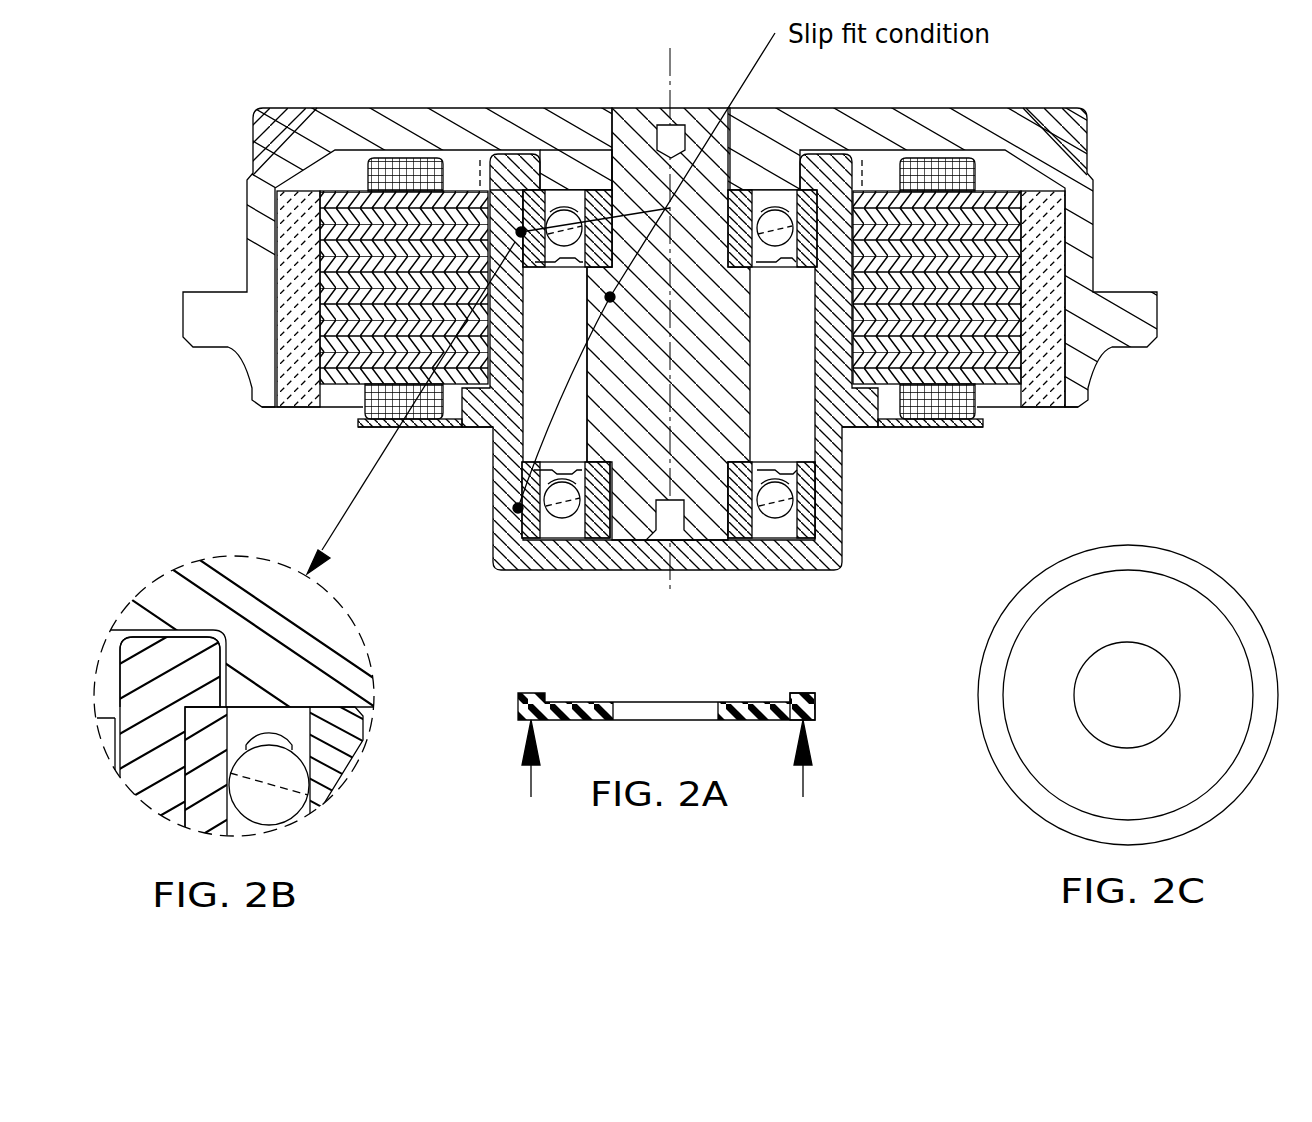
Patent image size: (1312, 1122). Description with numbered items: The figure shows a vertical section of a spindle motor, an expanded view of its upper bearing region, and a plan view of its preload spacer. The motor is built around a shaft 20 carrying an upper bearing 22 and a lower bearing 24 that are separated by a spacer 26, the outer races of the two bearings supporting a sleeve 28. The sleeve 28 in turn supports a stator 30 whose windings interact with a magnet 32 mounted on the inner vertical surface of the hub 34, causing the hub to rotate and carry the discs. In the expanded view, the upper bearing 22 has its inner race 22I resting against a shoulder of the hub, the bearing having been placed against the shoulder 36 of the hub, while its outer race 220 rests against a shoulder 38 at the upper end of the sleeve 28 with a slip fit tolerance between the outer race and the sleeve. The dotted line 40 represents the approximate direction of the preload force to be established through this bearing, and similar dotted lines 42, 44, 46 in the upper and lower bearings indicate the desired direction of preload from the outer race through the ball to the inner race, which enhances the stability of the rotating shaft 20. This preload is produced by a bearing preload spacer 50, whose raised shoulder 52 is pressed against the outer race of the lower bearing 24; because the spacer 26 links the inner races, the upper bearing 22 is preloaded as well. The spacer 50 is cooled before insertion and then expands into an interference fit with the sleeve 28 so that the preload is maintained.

In FIG. 2A, the shaft 20 is at (622, 135).
In FIG. 2A, the upper bearing 22 is at (550, 141).
In FIG. 2A, the inner race 22I is at (597, 192).
In FIG. 2B, the inner race 22I is at (353, 748).
In FIG. 2A, the outer race 220 is at (530, 205).
In FIG. 2B, the outer race 220 is at (207, 797).
In FIG. 2A, the lower bearing 24 is at (568, 545).
In FIG. 2A, the spacer 26 is at (605, 335).
In FIG. 2A, the sleeve 28 is at (465, 430).
In FIG. 2B, the sleeve 28 is at (148, 773).
In FIG. 2A, the stator 30 is at (457, 185).
In FIG. 2A, the magnet 32 is at (290, 400).
In FIG. 2A, the hub 34 is at (262, 252).
In FIG. 2A, the shoulder 36 is at (572, 145).
In FIG. 2A, the shoulder 38 is at (522, 154).
In FIG. 2B, the shoulder 38 is at (168, 650).
In FIG. 2B, the dotted line 40 is at (268, 790).
In FIG. 2A, the dotted line 42 is at (560, 505).
In FIG. 2A, the dotted line 44 is at (775, 505).
In FIG. 2A, the dotted line 46 is at (777, 226).
In FIG. 2A, the bearing preload spacer 50 is at (570, 722).
In FIG. 2C, the bearing preload spacer 50 is at (1148, 548).
In FIG. 2A, the raised shoulder 52 is at (803, 695).
In FIG. 2C, the raised shoulder 52 is at (1243, 627).